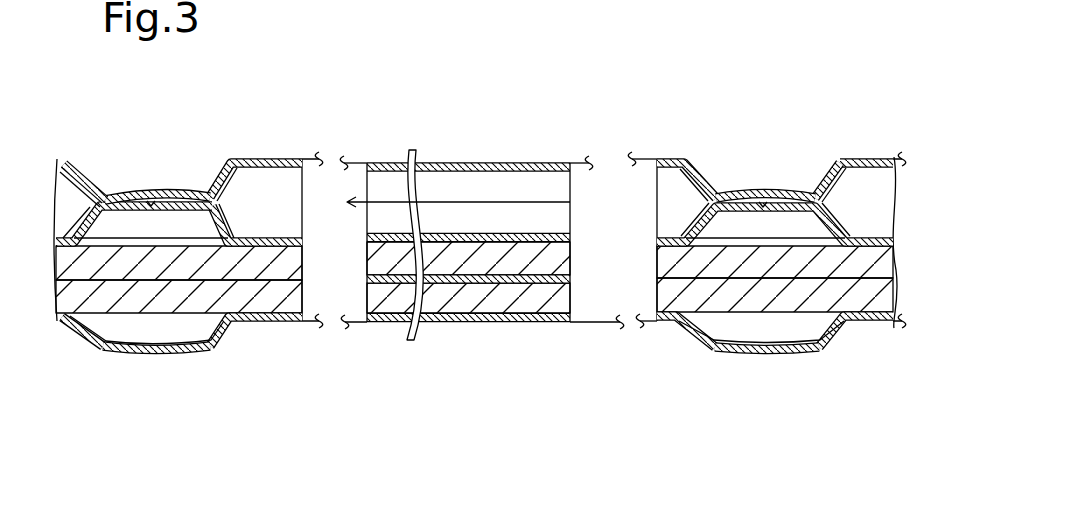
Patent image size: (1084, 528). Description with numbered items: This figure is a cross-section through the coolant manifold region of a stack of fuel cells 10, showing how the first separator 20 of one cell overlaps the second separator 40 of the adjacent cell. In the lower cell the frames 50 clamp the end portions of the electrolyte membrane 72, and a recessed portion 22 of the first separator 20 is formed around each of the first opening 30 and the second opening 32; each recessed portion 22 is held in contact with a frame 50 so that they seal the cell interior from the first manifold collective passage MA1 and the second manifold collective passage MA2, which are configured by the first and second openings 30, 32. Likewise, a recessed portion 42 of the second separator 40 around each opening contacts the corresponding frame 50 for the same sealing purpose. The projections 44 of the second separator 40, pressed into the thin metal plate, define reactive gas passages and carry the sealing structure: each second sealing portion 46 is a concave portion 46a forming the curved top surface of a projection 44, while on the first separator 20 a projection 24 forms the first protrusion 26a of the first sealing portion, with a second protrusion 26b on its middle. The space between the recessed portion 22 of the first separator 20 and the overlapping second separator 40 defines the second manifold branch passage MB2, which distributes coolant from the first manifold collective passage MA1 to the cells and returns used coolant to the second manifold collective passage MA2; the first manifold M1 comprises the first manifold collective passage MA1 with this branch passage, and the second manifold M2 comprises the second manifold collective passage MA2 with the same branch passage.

The fuel cell 10 is at (505, 221).
The first separator 20 is at (481, 155).
The recessed portion 22 is at (262, 237).
The projection 24 is at (828, 148).
The first protrusion 26a is at (98, 197).
The second protrusion 26b is at (151, 208).
The first opening 30 is at (642, 123).
The second opening 32 is at (325, 160).
The second separator 40 is at (484, 266).
The recessed portion 42 is at (273, 159).
The projection 44 is at (468, 279).
The second sealing portion 46 is at (461, 279).
The concave portion 46a is at (461, 265).
The frame 50 is at (570, 247).
The electrolyte membrane 72 is at (489, 283).
The first manifold M1 is at (490, 194).
The second manifold M2 is at (393, 176).
The first manifold collective passage MA1 is at (593, 177).
The second manifold collective passage MA2 is at (364, 197).
The second manifold branch passage MB2 is at (391, 172).